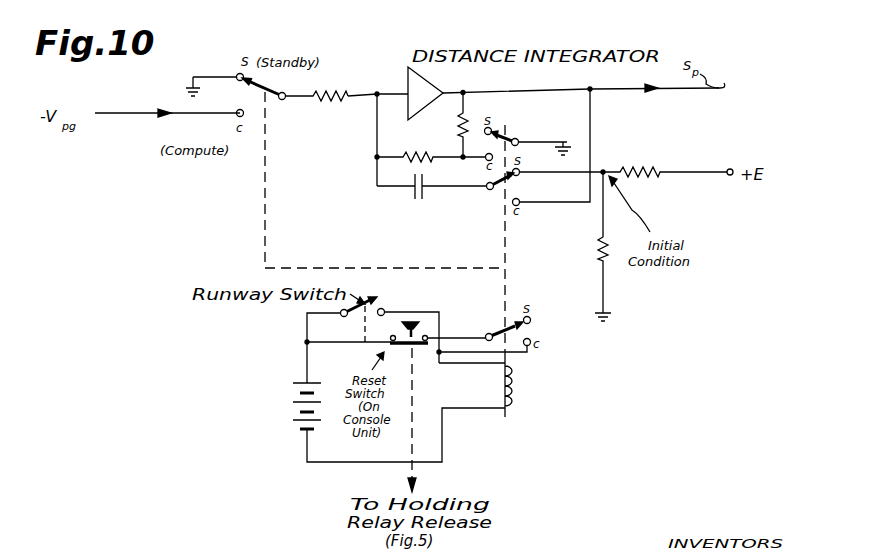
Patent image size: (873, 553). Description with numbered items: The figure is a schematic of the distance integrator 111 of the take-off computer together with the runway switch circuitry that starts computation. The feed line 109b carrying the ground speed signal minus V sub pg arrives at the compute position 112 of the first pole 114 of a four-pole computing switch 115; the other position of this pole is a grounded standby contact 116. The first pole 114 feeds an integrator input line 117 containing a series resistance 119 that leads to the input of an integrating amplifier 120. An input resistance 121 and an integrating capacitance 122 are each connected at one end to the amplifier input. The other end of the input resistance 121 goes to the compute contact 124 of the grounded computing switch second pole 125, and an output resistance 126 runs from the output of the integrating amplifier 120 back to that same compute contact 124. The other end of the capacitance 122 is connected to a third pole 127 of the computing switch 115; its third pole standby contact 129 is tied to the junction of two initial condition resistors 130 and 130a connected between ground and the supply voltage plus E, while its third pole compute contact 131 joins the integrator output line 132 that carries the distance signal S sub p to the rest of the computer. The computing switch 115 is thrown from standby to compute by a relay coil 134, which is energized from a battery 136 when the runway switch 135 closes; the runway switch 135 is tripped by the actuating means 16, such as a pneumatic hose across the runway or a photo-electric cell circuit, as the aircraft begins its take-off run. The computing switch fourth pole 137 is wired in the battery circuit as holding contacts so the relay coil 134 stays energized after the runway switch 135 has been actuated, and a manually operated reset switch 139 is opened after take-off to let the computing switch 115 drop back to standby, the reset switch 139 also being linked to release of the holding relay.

The second pole feed line 109b is at (145, 114).
The distance integrator 111 is at (388, 76).
The compute position 112 is at (239, 109).
The first pole 114 is at (268, 84).
The four-pole computing switch 115 is at (267, 212).
The standby contact 116 is at (240, 72).
The integrator input line 117 is at (306, 99).
The series resistance 119 is at (338, 100).
The integrating amplifier 120 is at (424, 75).
The input resistance 121 is at (428, 150).
The integrating capacitance 122 is at (412, 195).
The compute contact 124 is at (483, 162).
The computing switch second pole 125 is at (500, 135).
The output resistance 126 is at (465, 116).
The third pole 127 is at (490, 192).
The third pole standby contact 129 is at (520, 177).
The initial condition resistor 130 is at (641, 178).
The initial condition resistor 130a is at (606, 258).
The third pole compute contact 131 is at (522, 207).
The integrator output line 132 is at (537, 89).
The relay coil 134 is at (514, 390).
The runway switch 135 is at (380, 297).
The battery 136 is at (297, 408).
The computing switch fourth pole 137 is at (500, 327).
The reset switch 139 is at (419, 346).
The actuating means 16 is at (360, 318).